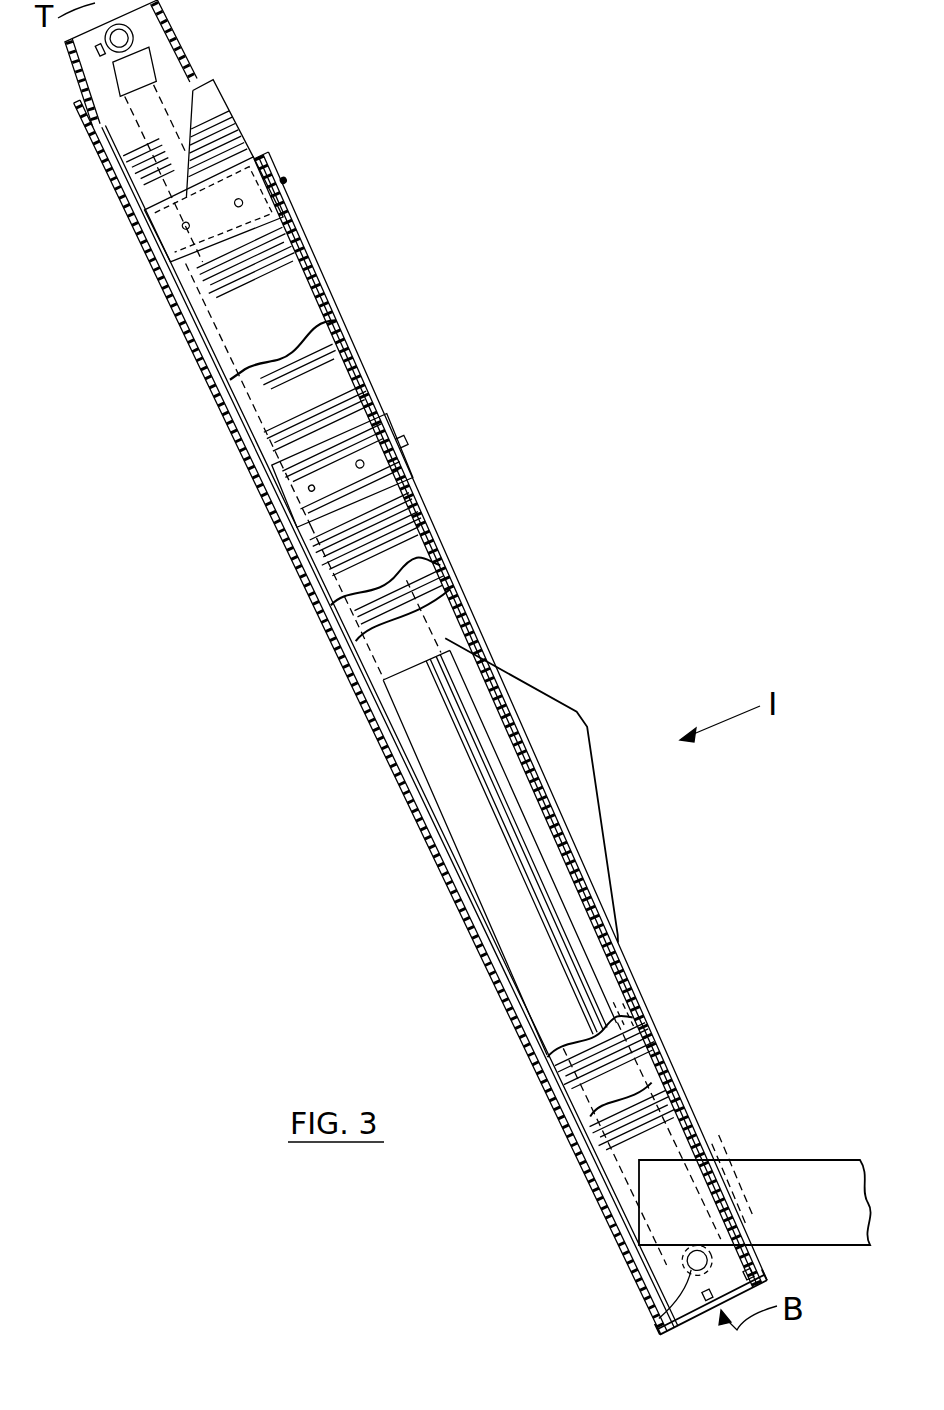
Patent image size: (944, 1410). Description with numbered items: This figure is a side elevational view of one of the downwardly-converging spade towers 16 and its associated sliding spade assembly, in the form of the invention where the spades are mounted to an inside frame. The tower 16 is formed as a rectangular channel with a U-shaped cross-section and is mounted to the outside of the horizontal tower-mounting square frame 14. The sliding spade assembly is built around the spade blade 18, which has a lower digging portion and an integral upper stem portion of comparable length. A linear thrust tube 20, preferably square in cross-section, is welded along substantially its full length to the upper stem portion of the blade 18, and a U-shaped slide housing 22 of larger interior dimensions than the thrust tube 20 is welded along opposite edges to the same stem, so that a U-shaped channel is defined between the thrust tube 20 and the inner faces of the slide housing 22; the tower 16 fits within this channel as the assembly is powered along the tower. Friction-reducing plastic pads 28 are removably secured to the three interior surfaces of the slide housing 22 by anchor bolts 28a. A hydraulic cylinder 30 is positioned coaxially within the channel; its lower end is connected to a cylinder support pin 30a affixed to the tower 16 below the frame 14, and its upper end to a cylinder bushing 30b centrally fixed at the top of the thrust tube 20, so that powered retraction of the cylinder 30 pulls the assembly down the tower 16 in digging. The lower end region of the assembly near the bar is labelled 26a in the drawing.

The square frame 14 is at (755, 1170).
The spade tower 16 is at (214, 106).
The spade blade 18 is at (598, 798).
The thrust tube 20 is at (178, 24).
The slide housing 22 is at (305, 307).
The lower bar end 26a is at (633, 1013).
The friction-reducing plastic pad 28 is at (283, 180).
The anchor bolt 28a is at (410, 442).
The hydraulic cylinder 30 is at (463, 717).
The cylinder support pin 30a is at (655, 1283).
The cylinder bushing 30b is at (100, 63).